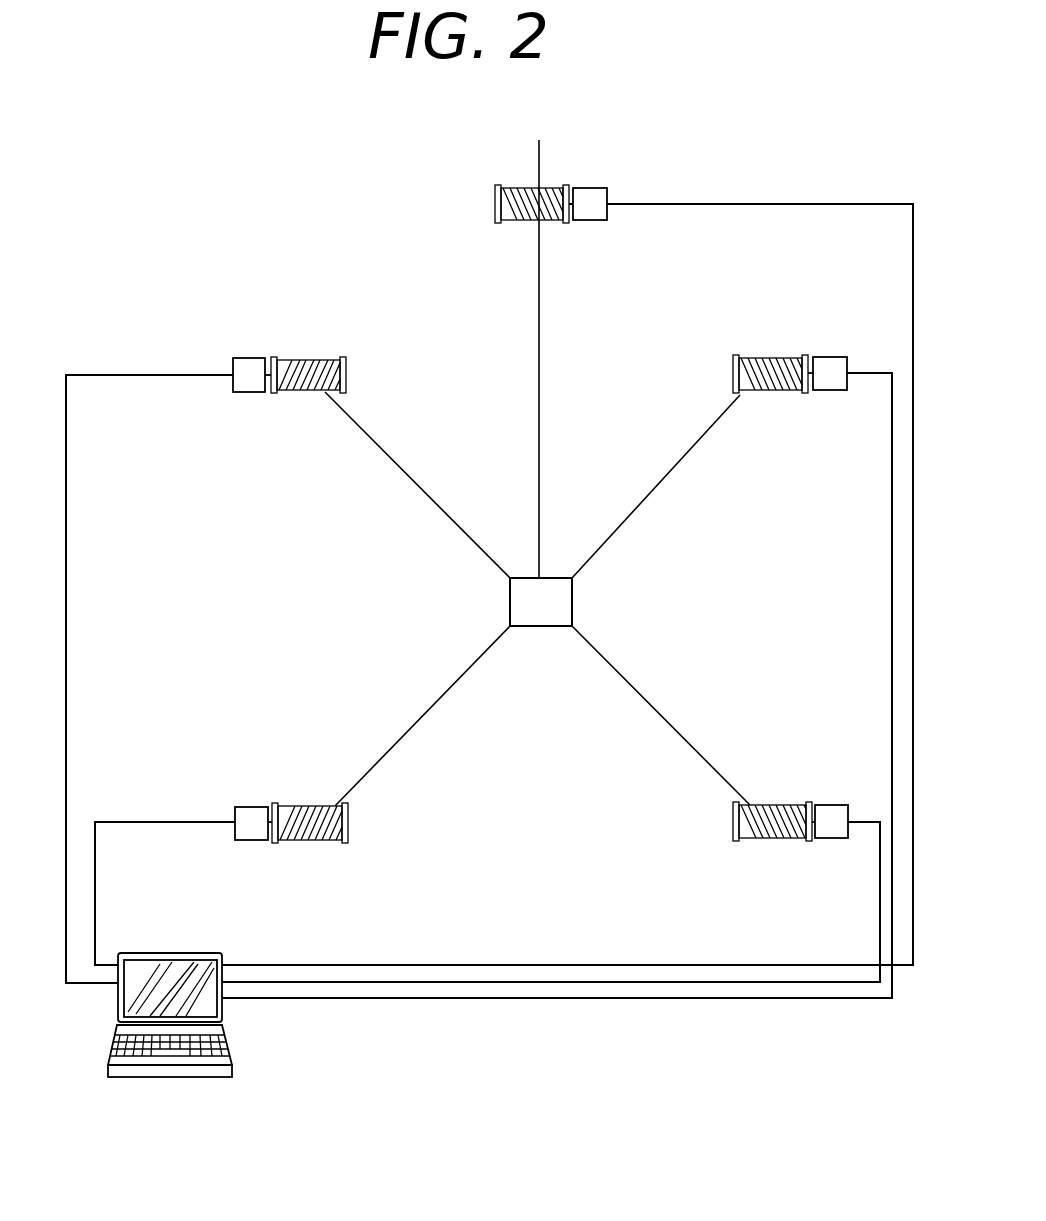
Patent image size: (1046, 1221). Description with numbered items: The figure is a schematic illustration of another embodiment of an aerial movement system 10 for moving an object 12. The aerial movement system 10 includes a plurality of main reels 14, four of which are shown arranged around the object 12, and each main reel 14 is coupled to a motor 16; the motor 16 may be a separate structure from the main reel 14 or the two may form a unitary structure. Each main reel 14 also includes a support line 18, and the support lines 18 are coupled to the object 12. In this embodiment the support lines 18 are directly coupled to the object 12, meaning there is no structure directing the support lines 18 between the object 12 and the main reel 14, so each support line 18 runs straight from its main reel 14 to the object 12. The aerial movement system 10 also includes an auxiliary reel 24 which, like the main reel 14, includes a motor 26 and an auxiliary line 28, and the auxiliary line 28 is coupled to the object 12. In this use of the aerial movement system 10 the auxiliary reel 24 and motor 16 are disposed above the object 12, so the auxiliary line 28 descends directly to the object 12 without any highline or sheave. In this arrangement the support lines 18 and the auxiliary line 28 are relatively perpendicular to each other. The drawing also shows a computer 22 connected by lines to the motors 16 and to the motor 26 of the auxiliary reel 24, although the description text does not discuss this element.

The aerial movement system 10 is at (172, 256).
The object 12 is at (573, 602).
The main reel 14 is at (310, 360).
The motor 16 is at (250, 365).
The support line 18 is at (420, 484).
The computer 22 is at (232, 1047).
The auxiliary reel 24 is at (540, 188).
The motor 26 is at (590, 190).
The auxiliary line 28 is at (540, 378).